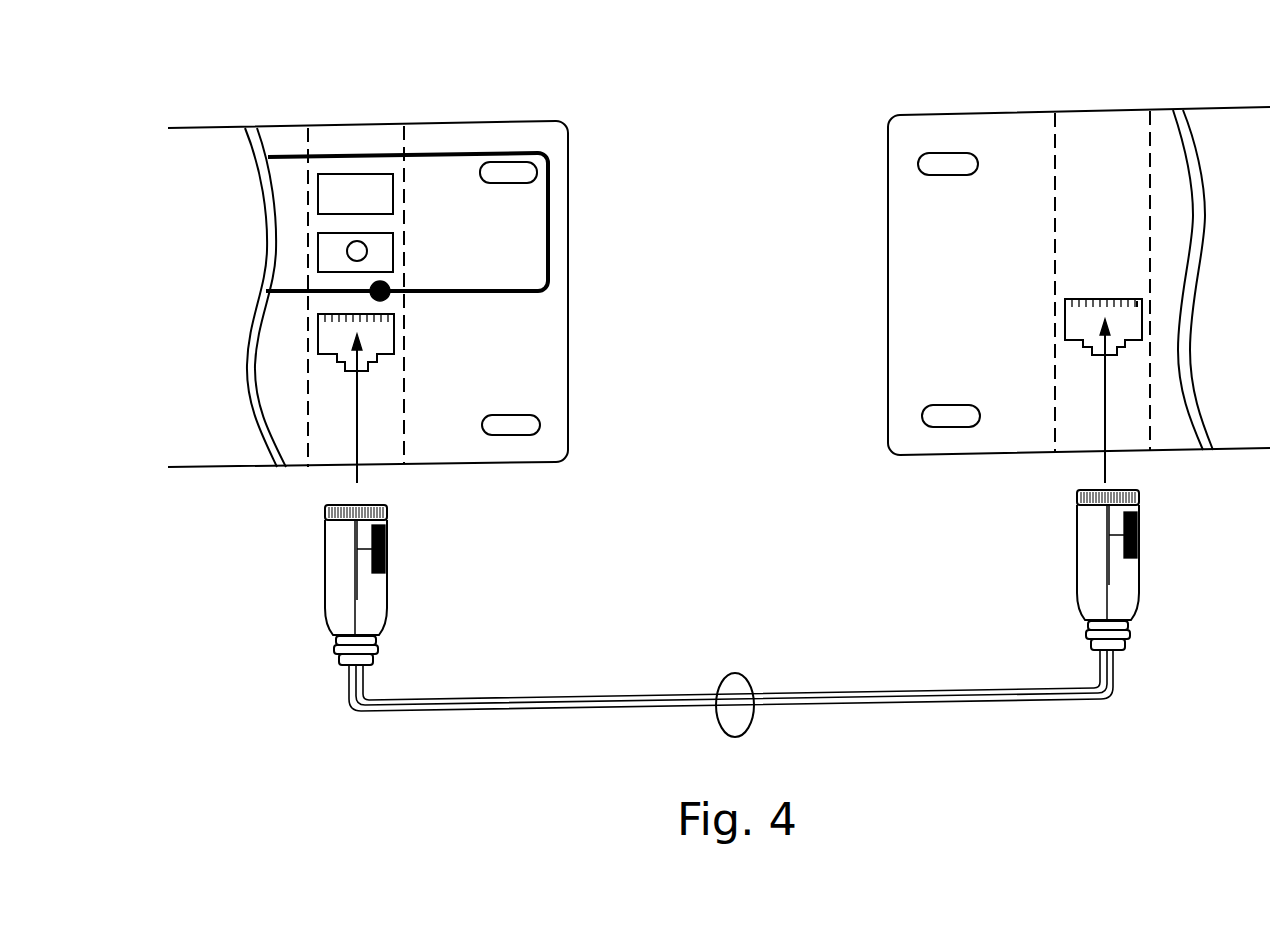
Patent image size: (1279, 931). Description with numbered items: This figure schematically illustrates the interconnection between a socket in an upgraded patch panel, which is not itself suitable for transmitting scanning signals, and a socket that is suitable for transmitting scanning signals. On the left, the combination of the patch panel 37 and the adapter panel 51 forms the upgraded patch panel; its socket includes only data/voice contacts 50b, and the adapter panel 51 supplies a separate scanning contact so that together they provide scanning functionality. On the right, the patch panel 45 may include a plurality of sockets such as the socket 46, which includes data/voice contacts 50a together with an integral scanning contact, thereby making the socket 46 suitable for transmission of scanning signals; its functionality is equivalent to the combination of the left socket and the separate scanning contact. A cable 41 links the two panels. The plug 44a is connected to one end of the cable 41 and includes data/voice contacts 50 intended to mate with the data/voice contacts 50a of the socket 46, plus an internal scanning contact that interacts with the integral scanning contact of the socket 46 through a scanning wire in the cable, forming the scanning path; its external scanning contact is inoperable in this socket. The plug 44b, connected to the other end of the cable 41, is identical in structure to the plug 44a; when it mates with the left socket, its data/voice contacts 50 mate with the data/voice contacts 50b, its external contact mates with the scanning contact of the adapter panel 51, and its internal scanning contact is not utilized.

The patch panel 37 is at (570, 222).
The adapter panel 51 is at (548, 157).
The data/voice contacts 50b is at (373, 319).
The patch panel 45 is at (887, 272).
The socket 46 is at (1065, 330).
The data/voice contacts 50a is at (1102, 299).
The data/voice contacts 50 is at (340, 505).
The plug 44b is at (327, 600).
The plug 44a is at (1077, 587).
The cable 41 is at (740, 688).